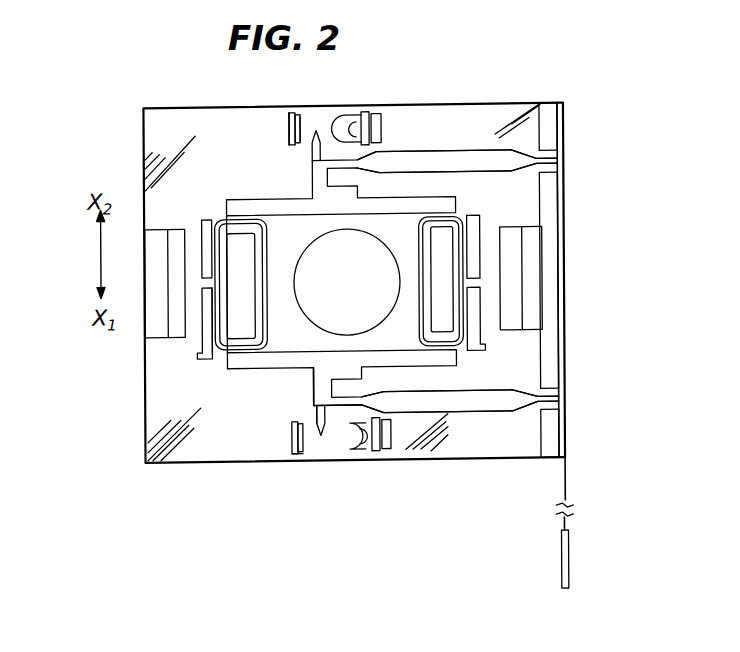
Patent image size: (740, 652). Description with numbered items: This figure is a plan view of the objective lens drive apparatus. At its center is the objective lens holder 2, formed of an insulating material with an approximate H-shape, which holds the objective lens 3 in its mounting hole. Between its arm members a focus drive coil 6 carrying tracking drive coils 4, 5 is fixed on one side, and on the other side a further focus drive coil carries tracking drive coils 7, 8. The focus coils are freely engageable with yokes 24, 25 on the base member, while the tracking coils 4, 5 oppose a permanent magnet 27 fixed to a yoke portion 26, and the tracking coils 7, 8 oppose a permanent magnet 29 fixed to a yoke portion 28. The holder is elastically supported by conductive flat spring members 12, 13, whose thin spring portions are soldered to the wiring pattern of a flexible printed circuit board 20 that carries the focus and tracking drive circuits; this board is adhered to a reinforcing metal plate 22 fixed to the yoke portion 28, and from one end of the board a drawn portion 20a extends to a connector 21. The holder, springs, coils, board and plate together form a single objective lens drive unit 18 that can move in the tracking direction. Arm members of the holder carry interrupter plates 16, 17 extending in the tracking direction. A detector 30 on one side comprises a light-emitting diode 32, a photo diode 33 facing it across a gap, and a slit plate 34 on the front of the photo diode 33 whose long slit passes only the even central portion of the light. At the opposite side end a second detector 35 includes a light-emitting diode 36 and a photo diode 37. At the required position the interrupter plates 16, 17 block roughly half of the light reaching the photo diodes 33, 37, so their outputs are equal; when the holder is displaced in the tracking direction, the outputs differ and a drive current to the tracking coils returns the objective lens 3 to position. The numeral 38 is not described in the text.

The objective lens holder 2 is at (282, 240).
The objective lens 3 is at (371, 259).
The tracking drive coil 4 is at (201, 226).
The tracking drive coil 5 is at (205, 347).
The focus drive coil 6 is at (218, 352).
The tracking drive coil 7 is at (483, 338).
The tracking drive coil 8 is at (485, 222).
The flat spring member 12 is at (452, 152).
The flat spring member 13 is at (454, 408).
The interrupter plate 16 is at (322, 440).
The interrupter plate 17 is at (320, 128).
The objective lens drive unit 18 is at (243, 373).
The flexible printed circuit board 20 is at (563, 216).
The drawn portion 20a is at (566, 489).
The connector 21 is at (560, 571).
The metal plate 22 is at (552, 241).
The yoke 24 is at (246, 312).
The yoke 25 is at (440, 312).
The yoke portion 26 is at (158, 321).
The permanent magnet 27 is at (182, 318).
The yoke portion 28 is at (537, 266).
The permanent magnet 29 is at (510, 303).
The detector 30 is at (285, 454).
The light-emitting diode 32 is at (359, 438).
The photo diode 33 is at (291, 435).
The slit plate 34 is at (318, 416).
The detector 35 is at (287, 141).
The light-emitting diode 36 is at (356, 122).
The photo diode 37 is at (290, 122).
The upper stopper 38 is at (306, 112).